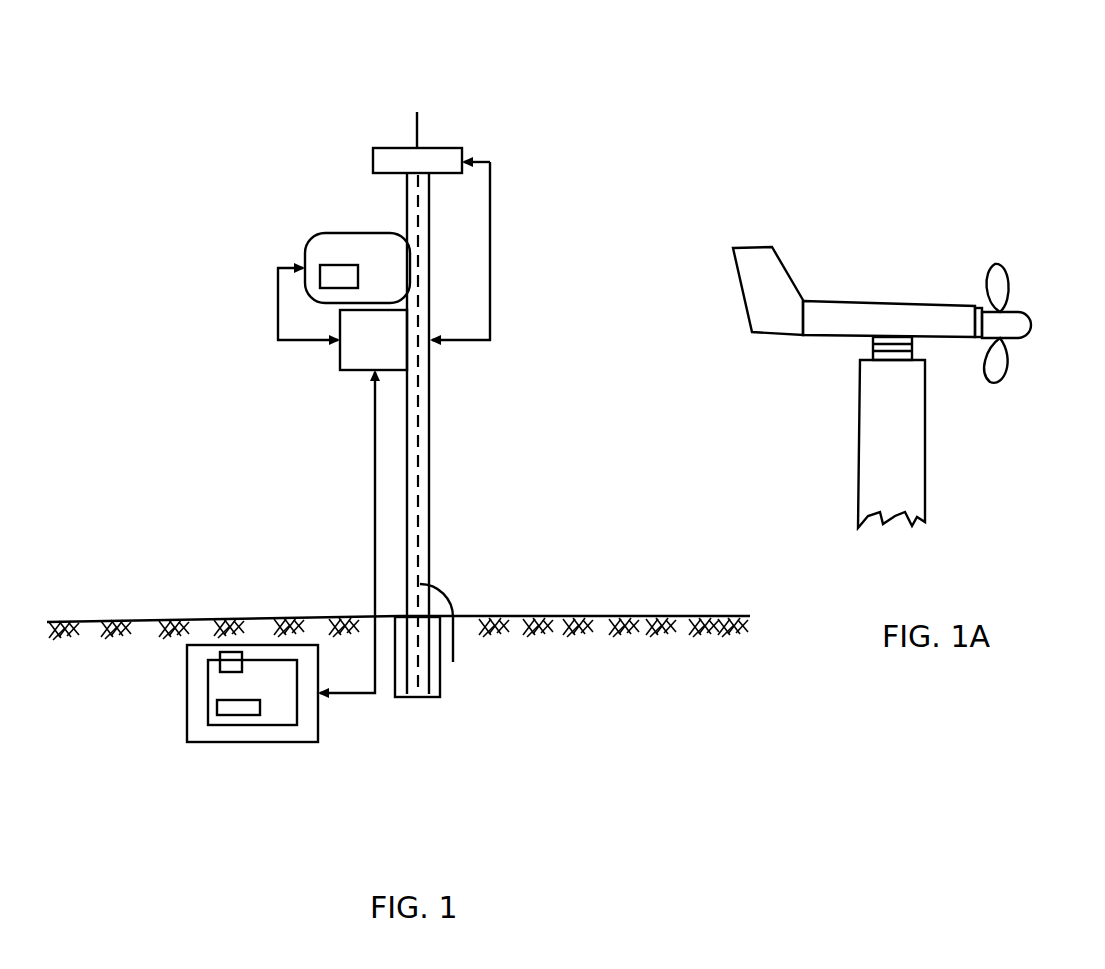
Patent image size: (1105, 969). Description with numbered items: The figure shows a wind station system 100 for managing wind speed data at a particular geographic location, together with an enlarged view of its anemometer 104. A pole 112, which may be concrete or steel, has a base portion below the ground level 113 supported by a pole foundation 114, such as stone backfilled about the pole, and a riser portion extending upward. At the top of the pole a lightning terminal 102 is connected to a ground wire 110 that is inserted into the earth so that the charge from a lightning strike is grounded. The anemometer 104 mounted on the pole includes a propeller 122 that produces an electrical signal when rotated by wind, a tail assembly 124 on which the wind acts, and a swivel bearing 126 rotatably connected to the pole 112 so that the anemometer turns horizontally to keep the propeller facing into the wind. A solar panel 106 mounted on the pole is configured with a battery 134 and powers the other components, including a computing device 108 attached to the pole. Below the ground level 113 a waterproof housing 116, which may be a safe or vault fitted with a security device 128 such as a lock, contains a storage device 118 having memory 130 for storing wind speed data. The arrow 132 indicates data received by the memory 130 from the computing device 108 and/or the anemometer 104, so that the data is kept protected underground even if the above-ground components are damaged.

In FIG. 1, the wind station system 100 is at (398, 95).
In FIG. 1, the lightning terminal 102 is at (415, 130).
In FIG. 1, the anemometer 104 is at (462, 148).
In FIG. 1A, the anemometer 104 is at (901, 256).
In FIG. 1, the solar panel 106 is at (315, 235).
In FIG. 1, the computing device 108 is at (338, 370).
In FIG. 1, the ground wire 110 is at (442, 592).
In FIG. 1, the pole 112 is at (435, 465).
In FIG. 1A, the pole 112 is at (913, 460).
In FIG. 1, the ground level 113 is at (578, 620).
In FIG. 1, the pole foundation 114 is at (440, 677).
In FIG. 1, the housing 116 is at (313, 737).
In FIG. 1, the storage device 118 is at (250, 725).
In FIG. 1A, the propeller 122 is at (1002, 285).
In FIG. 1A, the tail assembly 124 is at (755, 308).
In FIG. 1A, the swivel bearing 126 is at (870, 350).
In FIG. 1, the security device 128 is at (220, 657).
In FIG. 1, the memory 130 is at (215, 707).
In FIG. 1, the arrow 132 is at (372, 517).
In FIG. 1, the battery 134 is at (342, 265).